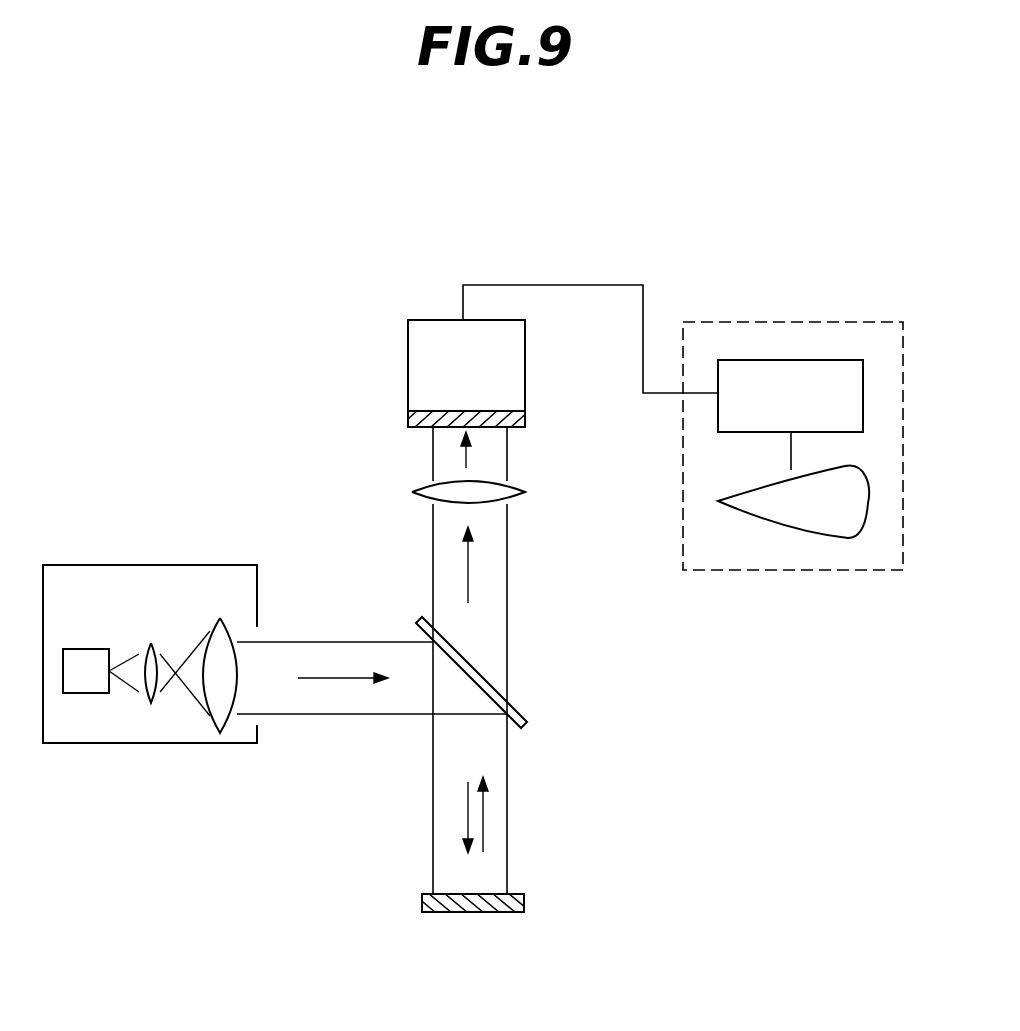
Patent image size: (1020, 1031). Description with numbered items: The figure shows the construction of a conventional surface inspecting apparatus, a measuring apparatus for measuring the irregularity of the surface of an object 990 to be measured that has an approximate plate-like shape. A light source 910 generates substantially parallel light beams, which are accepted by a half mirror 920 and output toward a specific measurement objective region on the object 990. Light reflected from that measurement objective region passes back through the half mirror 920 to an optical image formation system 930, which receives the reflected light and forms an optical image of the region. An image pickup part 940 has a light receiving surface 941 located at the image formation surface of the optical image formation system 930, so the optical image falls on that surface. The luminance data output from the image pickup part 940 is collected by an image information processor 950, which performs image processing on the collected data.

The illumination light source unit 910 is at (160, 565).
The beam splitter (half mirror) 920 is at (419, 619).
The imaging lens 930 is at (524, 493).
The image pickup device 940 is at (407, 342).
The light receiving surface 941 is at (407, 421).
The display and observer unit 950 is at (783, 570).
The object to be observed 990 is at (525, 903).